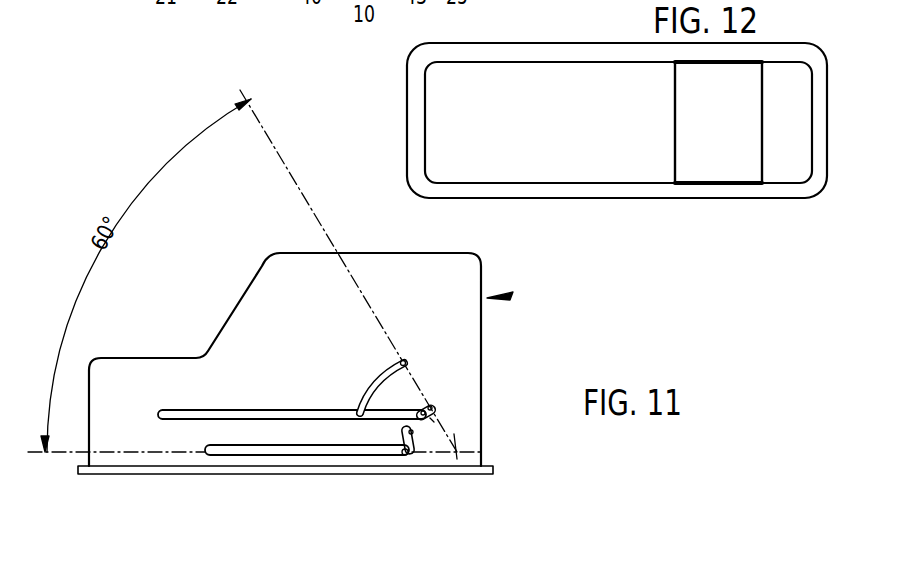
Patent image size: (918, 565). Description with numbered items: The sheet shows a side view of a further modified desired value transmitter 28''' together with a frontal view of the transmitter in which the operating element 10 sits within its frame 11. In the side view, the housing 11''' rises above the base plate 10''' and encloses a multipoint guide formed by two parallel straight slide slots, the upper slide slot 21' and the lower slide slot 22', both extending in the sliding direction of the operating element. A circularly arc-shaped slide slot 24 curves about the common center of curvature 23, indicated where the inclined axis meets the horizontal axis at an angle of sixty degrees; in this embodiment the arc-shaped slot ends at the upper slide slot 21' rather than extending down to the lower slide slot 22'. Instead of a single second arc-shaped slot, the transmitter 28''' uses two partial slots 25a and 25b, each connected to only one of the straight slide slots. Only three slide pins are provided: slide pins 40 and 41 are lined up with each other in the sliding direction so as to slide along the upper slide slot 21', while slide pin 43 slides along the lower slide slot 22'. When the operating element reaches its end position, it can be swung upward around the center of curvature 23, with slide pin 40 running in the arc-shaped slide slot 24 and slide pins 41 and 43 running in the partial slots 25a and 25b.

In FIG. 12, the operating element 10 is at (718, 149).
In FIG. 12, the frame 11 is at (617, 140).
In FIG. 11, the base plate 10''' is at (285, 498).
In FIG. 11, the housing 11''' is at (285, 339).
In FIG. 11, the upper straight slide slot 21' is at (292, 465).
In FIG. 11, the lower straight slide slot 22' is at (307, 482).
In FIG. 11, the center of curvature 23 is at (458, 447).
In FIG. 11, the arc-shaped slide slot 24 is at (403, 370).
In FIG. 11, the partial slot 25a is at (436, 410).
In FIG. 11, the partial slot 25b is at (413, 435).
In FIG. 11, the transmitter 28''' is at (537, 281).
In FIG. 11, the slide pin 40 is at (358, 418).
In FIG. 11, the slide pin 41 is at (436, 414).
In FIG. 11, the slide pin 43 is at (409, 457).